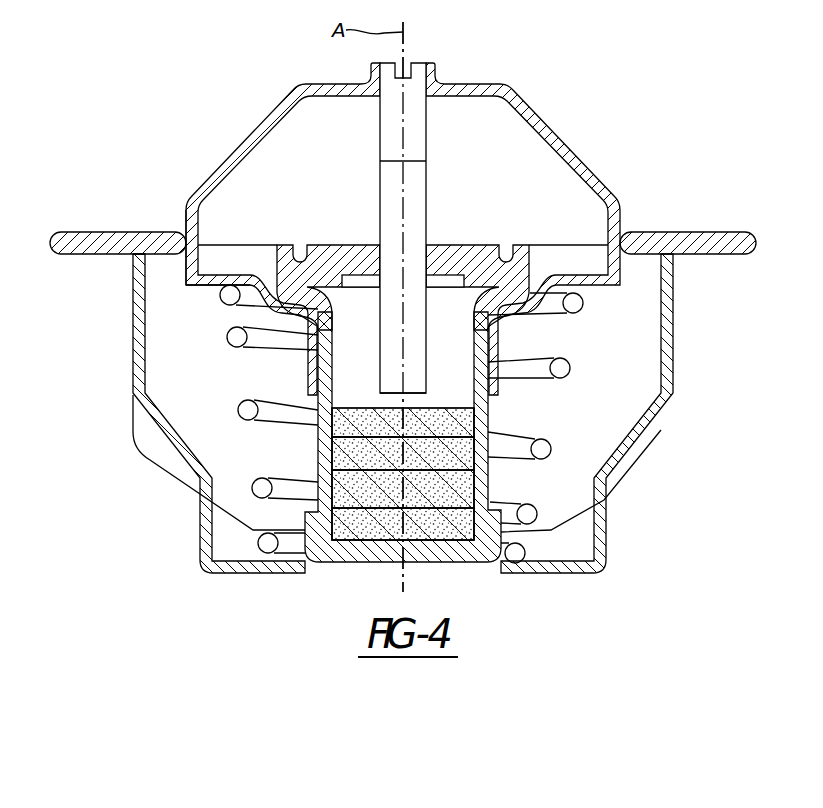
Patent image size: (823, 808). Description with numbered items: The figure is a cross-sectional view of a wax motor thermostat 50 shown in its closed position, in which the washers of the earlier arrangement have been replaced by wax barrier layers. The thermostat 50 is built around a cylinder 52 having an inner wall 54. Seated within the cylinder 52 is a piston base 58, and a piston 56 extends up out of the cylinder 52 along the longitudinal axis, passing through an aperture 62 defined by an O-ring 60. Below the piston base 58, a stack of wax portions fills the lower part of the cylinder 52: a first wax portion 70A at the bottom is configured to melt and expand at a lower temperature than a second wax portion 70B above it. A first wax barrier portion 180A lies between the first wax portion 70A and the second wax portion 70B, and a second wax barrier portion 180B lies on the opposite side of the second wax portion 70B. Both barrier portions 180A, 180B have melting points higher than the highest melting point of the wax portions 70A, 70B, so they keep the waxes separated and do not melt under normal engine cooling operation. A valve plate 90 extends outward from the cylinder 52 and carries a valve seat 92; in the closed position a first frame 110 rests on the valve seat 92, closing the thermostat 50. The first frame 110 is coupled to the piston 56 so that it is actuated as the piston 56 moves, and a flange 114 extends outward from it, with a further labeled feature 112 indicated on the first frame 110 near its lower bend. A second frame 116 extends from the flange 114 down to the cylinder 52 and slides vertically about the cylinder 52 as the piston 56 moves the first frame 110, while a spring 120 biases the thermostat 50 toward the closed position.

The wax motor thermostat 50 is at (108, 97).
The cylinder 52 is at (433, 552).
The inner wall 54 is at (493, 338).
The piston 56 is at (417, 190).
The piston base 58 is at (357, 393).
The O-ring 60 is at (457, 265).
The aperture 62 is at (427, 245).
The first wax portion 70A is at (360, 530).
The second wax portion 70B is at (352, 440).
The valve plate 90 is at (134, 343).
The valve seat 92 is at (140, 258).
The first frame 110 is at (325, 93).
The cap bend 112 is at (205, 243).
The flange 114 is at (736, 243).
The second frame 116 is at (134, 302).
The spring 120 is at (193, 287).
The first wax barrier portion 180A is at (340, 492).
The second wax barrier portion 180B is at (345, 418).